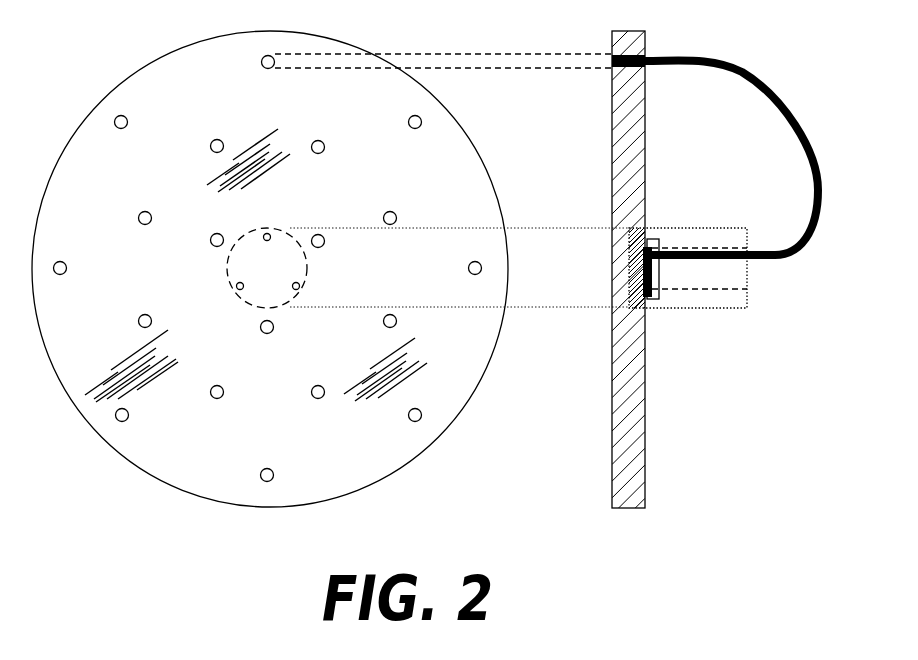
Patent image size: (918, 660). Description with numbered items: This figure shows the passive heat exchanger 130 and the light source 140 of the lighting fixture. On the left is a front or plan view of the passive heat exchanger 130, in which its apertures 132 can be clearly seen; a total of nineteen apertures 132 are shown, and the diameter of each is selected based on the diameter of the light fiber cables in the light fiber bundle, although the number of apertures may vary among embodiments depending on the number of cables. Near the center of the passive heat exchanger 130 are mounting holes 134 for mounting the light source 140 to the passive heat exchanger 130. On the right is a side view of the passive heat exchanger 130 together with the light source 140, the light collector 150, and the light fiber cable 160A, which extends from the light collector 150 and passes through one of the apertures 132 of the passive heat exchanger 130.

The passive heat exchanger 130 is at (453, 407).
The apertures 132 is at (263, 67).
The mounting holes 134 is at (266, 233).
The light source 140 is at (650, 289).
The light collector 150 is at (747, 308).
The light fiber cable 160A is at (762, 100).